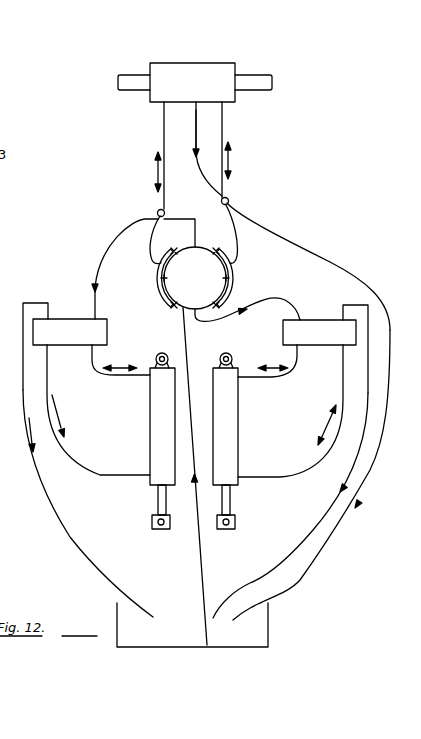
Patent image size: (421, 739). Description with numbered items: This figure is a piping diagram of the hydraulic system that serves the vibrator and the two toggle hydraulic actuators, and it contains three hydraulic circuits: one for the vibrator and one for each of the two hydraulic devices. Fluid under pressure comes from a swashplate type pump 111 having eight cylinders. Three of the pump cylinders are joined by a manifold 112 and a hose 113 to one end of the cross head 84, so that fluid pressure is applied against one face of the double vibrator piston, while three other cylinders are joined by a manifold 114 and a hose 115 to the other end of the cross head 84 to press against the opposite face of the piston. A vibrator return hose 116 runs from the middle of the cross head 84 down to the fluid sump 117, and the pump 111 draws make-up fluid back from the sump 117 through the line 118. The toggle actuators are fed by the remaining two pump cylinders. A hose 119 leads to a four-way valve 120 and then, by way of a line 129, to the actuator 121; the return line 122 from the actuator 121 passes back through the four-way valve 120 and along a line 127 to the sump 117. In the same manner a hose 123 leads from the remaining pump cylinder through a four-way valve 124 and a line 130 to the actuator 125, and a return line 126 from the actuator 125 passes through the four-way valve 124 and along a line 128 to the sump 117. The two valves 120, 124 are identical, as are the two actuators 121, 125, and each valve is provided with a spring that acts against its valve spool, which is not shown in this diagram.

The cross head 84 is at (195, 58).
The swashplate type pump 111 is at (188, 296).
The manifold 112 is at (158, 289).
The hose 113 is at (164, 134).
The manifold 114 is at (235, 288).
The hose 115 is at (223, 138).
The vibrator return hose 116 is at (248, 223).
The fluid sump 117 is at (258, 636).
The line 118 is at (197, 543).
The hose 119 is at (124, 233).
The four-way valve 120 is at (68, 322).
The actuator 121 is at (156, 418).
The return line 122 is at (82, 464).
The hose 123 is at (275, 300).
The four-way valve 124 is at (316, 320).
The actuator 125 is at (232, 437).
The return line 126 is at (303, 470).
The line 127 is at (50, 500).
The line 128 is at (293, 544).
The line 129 is at (95, 350).
The line 130 is at (263, 377).